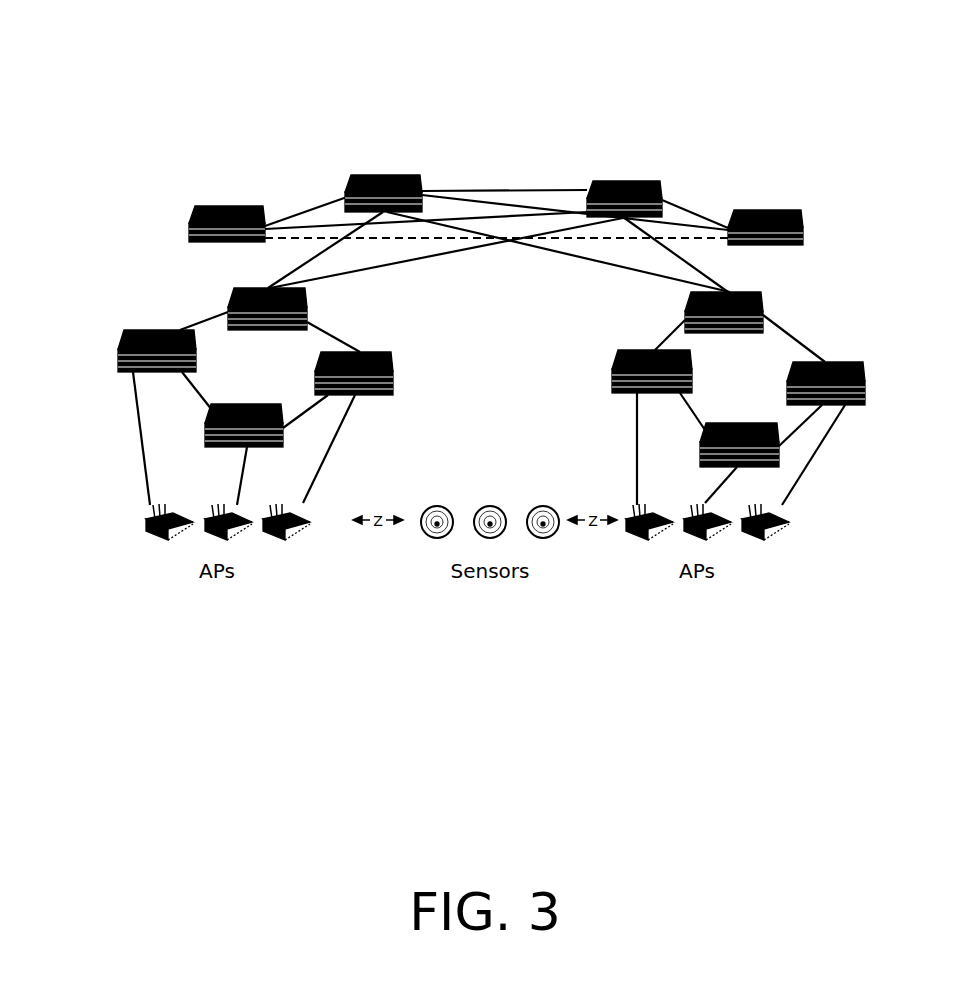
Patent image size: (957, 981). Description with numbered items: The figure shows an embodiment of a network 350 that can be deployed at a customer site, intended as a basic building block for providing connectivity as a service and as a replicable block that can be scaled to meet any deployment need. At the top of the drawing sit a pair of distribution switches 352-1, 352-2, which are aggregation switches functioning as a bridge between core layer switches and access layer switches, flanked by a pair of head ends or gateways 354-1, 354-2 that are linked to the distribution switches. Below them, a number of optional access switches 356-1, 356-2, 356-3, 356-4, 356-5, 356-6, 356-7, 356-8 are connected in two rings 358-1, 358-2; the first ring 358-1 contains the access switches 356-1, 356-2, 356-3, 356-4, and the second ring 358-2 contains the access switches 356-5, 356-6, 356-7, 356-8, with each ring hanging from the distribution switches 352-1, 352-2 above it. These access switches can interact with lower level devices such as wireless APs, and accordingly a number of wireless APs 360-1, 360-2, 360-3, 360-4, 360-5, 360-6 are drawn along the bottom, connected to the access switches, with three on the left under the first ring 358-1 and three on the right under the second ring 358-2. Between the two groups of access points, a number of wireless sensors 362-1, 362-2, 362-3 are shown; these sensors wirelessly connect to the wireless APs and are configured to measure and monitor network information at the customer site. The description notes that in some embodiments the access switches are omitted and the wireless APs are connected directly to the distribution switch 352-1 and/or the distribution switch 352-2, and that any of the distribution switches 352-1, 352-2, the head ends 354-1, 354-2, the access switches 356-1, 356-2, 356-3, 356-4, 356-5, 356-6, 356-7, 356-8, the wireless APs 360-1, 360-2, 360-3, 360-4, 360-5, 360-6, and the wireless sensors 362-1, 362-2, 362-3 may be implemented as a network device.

The network 350 is at (555, 37).
The distribution switch 352-1 is at (430, 174).
The distribution switch 352-2 is at (668, 181).
The head end 354-1 is at (197, 225).
The head end 354-2 is at (796, 226).
The access switch 356-1 is at (244, 291).
The access switch 356-2 is at (133, 328).
The access switch 356-3 is at (205, 430).
The access switch 356-4 is at (420, 362).
The access switch 356-5 is at (790, 298).
The access switch 356-6 is at (612, 368).
The access switch 356-7 is at (700, 457).
The access switch 356-8 is at (895, 367).
The ring 358-1 is at (231, 387).
The ring 358-2 is at (713, 388).
The wireless AP 360-1 is at (142, 516).
The wireless AP 360-2 is at (204, 511).
The wireless AP 360-3 is at (325, 508).
The wireless AP 360-4 is at (626, 531).
The wireless AP 360-5 is at (687, 510).
The wireless AP 360-6 is at (785, 527).
The wireless sensor 362-1 is at (445, 496).
The wireless sensor 362-2 is at (491, 505).
The wireless sensor 362-3 is at (555, 496).